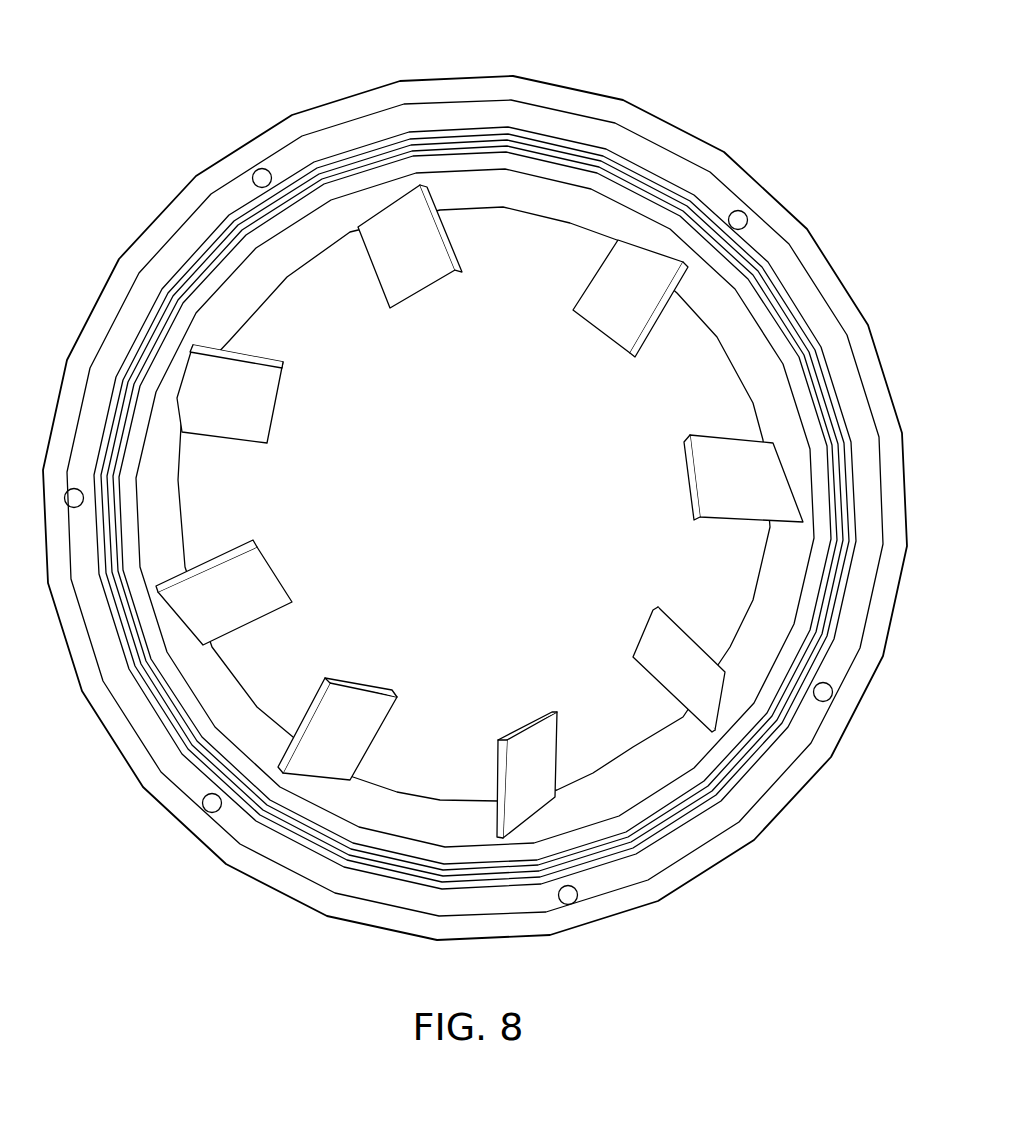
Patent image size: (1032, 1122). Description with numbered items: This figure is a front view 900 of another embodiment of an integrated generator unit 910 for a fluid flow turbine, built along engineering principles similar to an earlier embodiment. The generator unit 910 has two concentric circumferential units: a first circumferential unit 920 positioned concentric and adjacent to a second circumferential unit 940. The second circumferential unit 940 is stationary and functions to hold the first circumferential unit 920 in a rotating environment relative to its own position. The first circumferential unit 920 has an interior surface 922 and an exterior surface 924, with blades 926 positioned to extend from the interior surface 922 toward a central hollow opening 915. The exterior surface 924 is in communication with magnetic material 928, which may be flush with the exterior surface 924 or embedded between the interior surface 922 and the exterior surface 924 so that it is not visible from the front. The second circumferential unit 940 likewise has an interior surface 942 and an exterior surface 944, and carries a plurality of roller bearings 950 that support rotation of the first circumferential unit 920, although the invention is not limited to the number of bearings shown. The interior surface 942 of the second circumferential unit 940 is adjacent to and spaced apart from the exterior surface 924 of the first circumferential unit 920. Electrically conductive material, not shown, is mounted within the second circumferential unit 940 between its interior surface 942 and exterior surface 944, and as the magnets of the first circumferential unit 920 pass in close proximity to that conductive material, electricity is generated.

The front view 900 is at (183, 970).
The generator unit 910 is at (364, 74).
The hollow opening 915 is at (363, 412).
The first circumferential unit 920 is at (525, 153).
The interior surface 922 is at (533, 218).
The exterior surface 924 is at (555, 107).
The blades 926 is at (400, 290).
The magnetic material 928 is at (320, 138).
The second circumferential unit 940 is at (590, 103).
The interior surface 942 is at (595, 903).
The exterior surface 944 is at (723, 863).
The roller bearing 950 is at (823, 692).